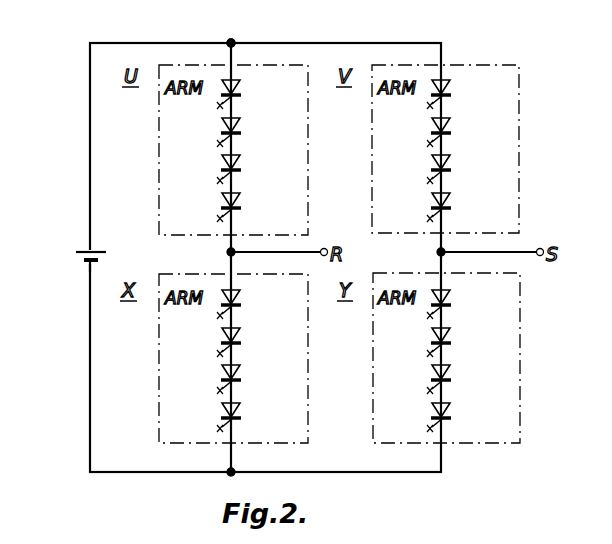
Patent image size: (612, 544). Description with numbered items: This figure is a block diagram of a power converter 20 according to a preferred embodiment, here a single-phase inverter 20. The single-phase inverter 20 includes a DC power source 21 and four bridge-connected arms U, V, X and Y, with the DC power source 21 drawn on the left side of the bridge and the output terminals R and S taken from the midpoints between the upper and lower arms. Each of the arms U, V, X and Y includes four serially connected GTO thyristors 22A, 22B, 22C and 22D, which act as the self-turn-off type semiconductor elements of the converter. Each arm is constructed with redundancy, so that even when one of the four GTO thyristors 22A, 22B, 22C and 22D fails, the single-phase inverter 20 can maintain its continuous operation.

The power converter 20 is at (243, 34).
The DC power source 21 is at (80, 258).
The GTO thyristor 22A is at (239, 84).
The GTO thyristor 22B is at (239, 122).
The GTO thyristor 22C is at (239, 159).
The GTO thyristor 22D is at (239, 197).